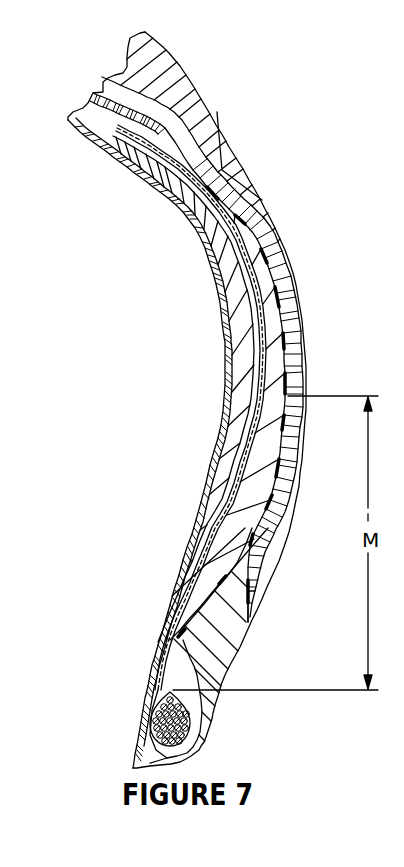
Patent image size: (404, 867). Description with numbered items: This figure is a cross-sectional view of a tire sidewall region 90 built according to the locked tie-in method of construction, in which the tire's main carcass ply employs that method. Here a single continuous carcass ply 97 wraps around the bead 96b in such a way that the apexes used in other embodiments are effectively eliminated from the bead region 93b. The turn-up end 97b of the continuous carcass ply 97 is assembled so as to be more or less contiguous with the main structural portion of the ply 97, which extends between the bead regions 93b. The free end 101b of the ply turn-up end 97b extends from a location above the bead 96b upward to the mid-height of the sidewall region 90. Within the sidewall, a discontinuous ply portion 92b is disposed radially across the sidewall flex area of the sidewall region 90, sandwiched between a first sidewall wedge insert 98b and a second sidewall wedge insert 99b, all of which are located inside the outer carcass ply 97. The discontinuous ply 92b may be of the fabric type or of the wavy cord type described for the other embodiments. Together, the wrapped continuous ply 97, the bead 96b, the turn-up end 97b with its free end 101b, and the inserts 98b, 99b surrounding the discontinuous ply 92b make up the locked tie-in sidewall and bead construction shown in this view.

The sidewall region 90 is at (283, 160).
The continuous carcass ply 97 is at (277, 300).
The discontinuous ply portion 92b is at (262, 310).
The first sidewall wedge insert 98b is at (245, 398).
The second sidewall wedge insert 99b is at (242, 513).
The free end 101b is at (270, 528).
The turn-up end 97b is at (255, 602).
The bead 96b is at (197, 718).
The bead region 93b is at (127, 633).